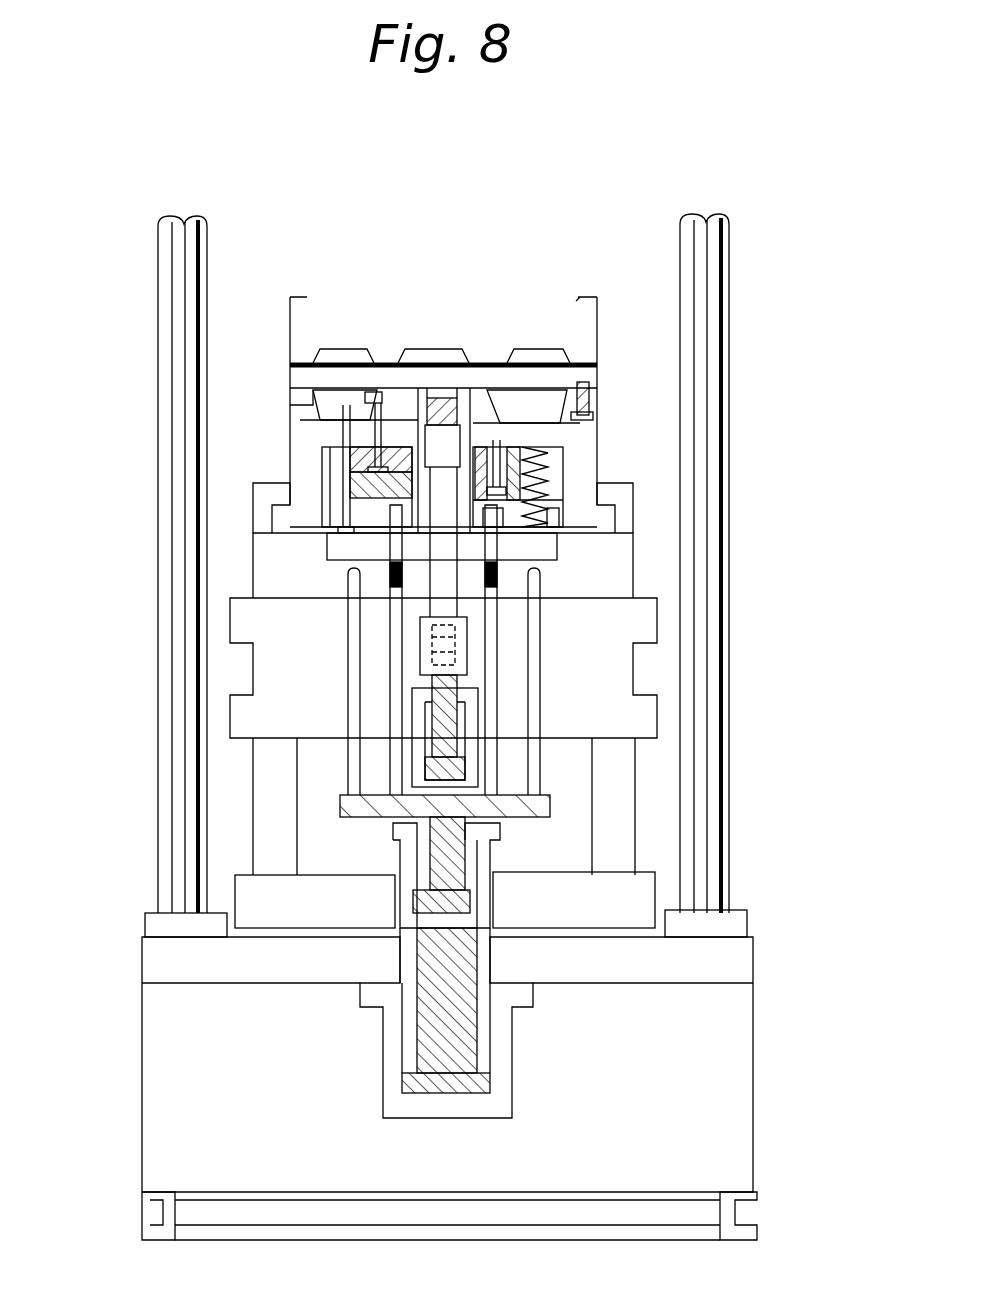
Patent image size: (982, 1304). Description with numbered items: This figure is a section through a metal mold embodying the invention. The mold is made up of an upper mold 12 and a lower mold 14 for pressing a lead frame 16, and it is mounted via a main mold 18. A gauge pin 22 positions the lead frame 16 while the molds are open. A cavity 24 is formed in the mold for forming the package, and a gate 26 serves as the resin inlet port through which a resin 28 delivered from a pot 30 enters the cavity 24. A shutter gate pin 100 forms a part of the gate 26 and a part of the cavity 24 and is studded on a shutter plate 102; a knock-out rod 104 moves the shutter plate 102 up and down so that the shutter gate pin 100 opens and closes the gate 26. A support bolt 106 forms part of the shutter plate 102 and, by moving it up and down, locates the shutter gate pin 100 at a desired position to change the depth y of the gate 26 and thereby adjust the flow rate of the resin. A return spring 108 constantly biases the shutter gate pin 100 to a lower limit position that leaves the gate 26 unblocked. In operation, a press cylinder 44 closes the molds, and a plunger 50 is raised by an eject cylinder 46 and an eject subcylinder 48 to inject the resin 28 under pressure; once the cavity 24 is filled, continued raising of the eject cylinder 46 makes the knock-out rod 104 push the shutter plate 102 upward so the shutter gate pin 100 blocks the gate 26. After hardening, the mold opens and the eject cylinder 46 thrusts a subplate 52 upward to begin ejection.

The upper mold 12 is at (575, 328).
The lower mold 14 is at (610, 512).
The lead frame 16 is at (568, 385).
The main mold 18 is at (618, 585).
The gauge pin 22 is at (596, 410).
The cavity 24 is at (305, 400).
The gate 26 is at (393, 395).
The resin 28 is at (440, 398).
The pot 30 is at (473, 388).
The press cylinder 44 is at (500, 1100).
The eject cylinder 46 is at (470, 898).
The eject subcylinder 48 is at (455, 768).
The plunger 50 is at (437, 450).
The subplate 52 is at (342, 803).
The shutter gate pin 100 is at (377, 427).
The shutter plate 102 is at (355, 457).
The knock-out rod 104 is at (397, 542).
The support bolt 106 is at (515, 437).
The return spring 108 is at (540, 452).
The depth of the gate y is at (378, 398).